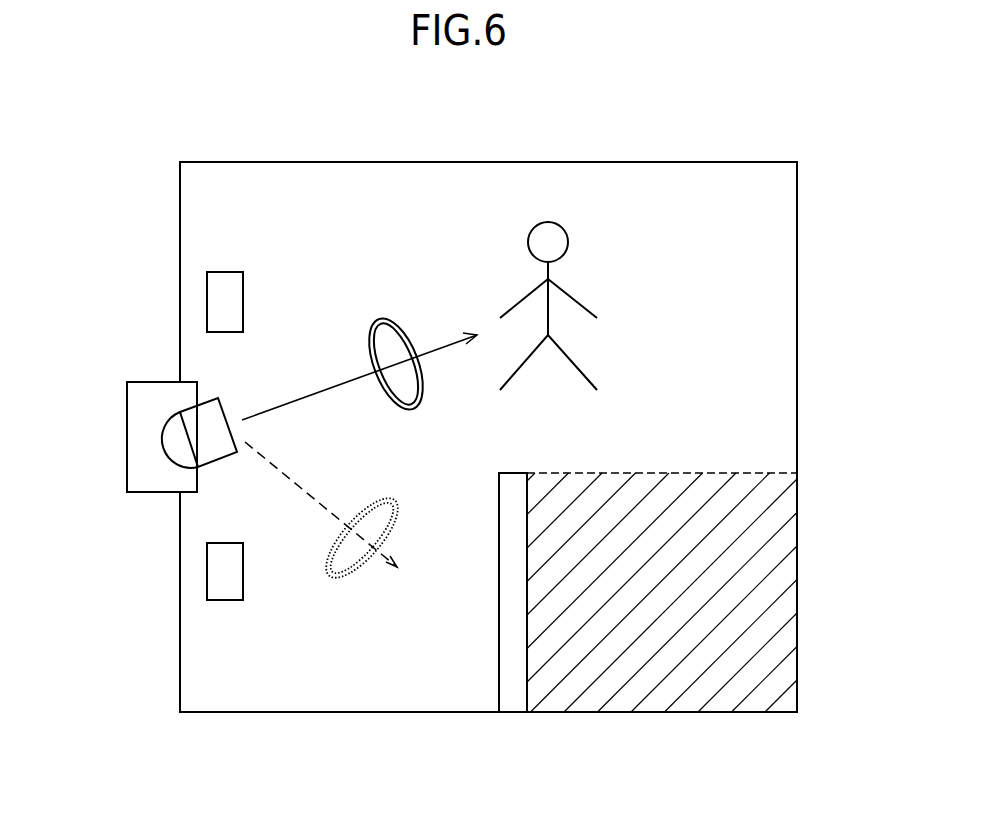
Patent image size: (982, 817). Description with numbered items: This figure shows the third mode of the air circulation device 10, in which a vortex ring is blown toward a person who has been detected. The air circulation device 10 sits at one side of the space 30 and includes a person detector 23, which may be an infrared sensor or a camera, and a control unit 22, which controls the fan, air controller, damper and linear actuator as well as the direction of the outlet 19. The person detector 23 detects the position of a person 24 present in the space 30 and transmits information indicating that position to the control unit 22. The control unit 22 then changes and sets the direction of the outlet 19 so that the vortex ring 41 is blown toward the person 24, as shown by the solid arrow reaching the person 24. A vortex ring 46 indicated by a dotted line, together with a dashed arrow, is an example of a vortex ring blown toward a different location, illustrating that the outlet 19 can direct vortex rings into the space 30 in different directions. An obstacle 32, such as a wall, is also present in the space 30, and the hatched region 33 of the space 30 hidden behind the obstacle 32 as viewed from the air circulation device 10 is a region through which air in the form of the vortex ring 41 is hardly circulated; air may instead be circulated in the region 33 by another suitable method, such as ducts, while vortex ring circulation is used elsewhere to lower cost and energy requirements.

The air circulation device 10 is at (110, 427).
The outlet 19 is at (224, 415).
The control unit 22 is at (226, 600).
The person detector 23 is at (226, 272).
The person 24 is at (568, 240).
The space 30 is at (726, 162).
The obstacle 32 is at (515, 713).
The region 33 is at (787, 570).
The vortex ring 41 is at (381, 318).
The vortex ring 46 is at (328, 578).